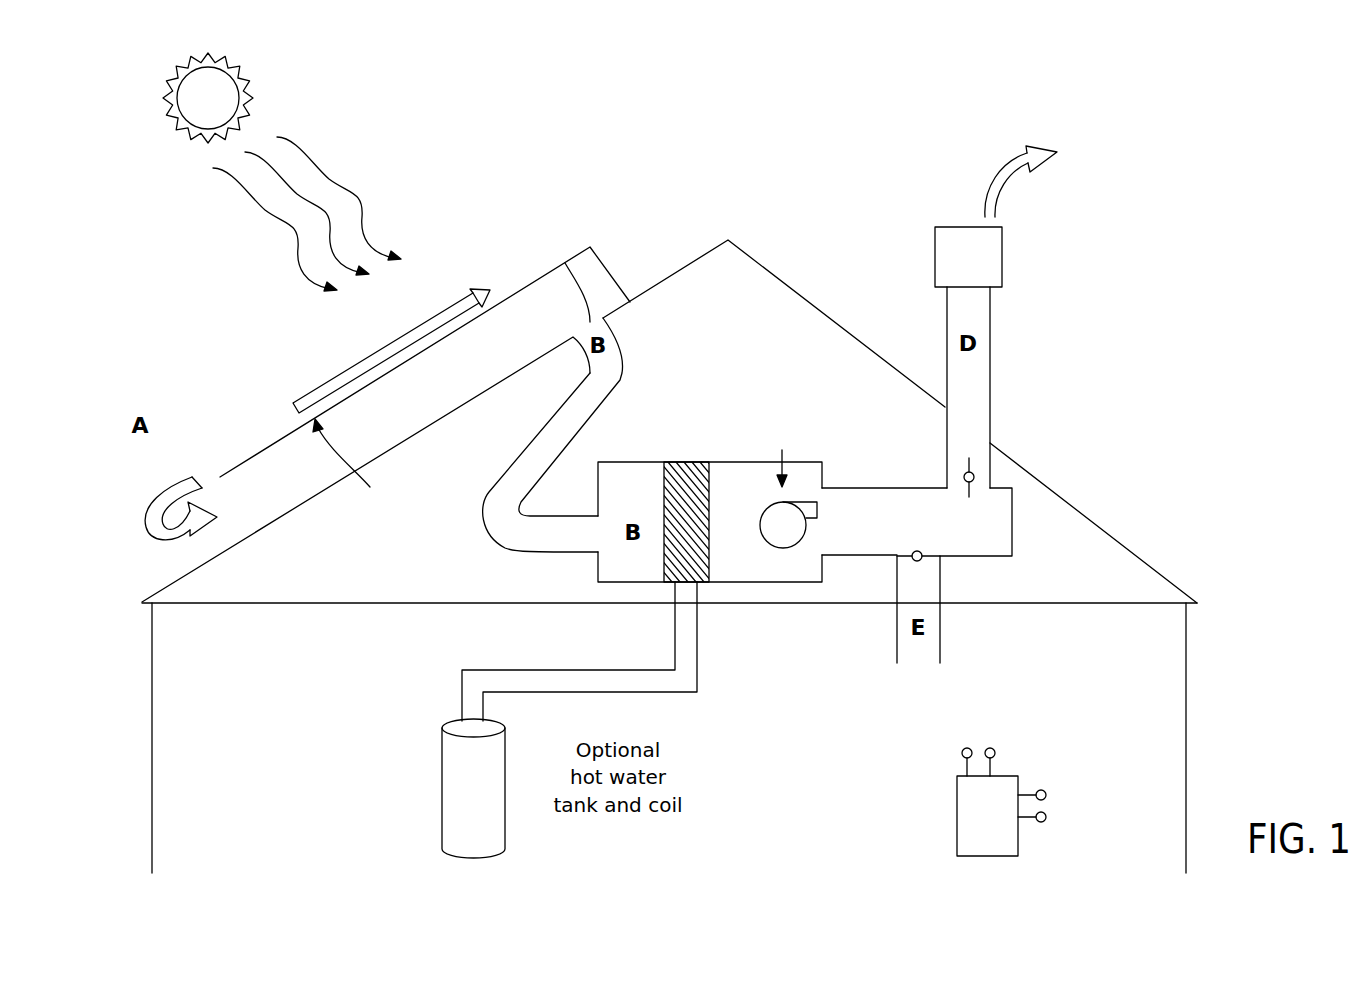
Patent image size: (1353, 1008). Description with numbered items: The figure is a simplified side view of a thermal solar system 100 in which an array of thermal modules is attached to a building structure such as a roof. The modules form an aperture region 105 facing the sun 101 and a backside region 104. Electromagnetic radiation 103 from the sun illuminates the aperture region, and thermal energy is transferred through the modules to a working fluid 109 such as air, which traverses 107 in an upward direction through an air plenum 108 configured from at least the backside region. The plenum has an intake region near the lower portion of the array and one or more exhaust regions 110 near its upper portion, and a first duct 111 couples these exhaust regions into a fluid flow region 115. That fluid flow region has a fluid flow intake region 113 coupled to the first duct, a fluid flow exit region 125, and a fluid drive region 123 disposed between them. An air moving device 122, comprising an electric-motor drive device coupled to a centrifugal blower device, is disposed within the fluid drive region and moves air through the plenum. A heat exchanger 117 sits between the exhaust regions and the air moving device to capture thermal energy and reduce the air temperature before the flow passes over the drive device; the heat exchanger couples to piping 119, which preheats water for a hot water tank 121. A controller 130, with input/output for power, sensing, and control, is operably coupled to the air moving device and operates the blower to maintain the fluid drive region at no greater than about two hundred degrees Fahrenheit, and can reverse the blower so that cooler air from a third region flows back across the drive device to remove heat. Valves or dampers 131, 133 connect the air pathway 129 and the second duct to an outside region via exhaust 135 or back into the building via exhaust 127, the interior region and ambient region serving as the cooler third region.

The thermal solar system 100 is at (812, 184).
The sun 101 is at (247, 90).
The electromagnetic radiation 103 is at (237, 187).
The backside region 104 is at (352, 468).
The aperture region 105 is at (517, 288).
The traversing of working fluid 107 is at (450, 307).
The air plenum 108 is at (408, 398).
The working fluid 109 is at (192, 523).
The exhaust region 110 is at (565, 263).
The duct 111 is at (620, 357).
The fluid flow intake region 113 is at (578, 537).
The fluid flow region 115 is at (735, 407).
The heat exchanger 117 is at (700, 583).
The piping 119 is at (670, 697).
The hot water tank 121 is at (450, 777).
The air moving device 122 is at (783, 548).
The fluid drive region 123 is at (826, 415).
The fluid flow exit region 125 is at (863, 547).
The exhaust to interior region 127 is at (930, 643).
The air pathway 129 is at (977, 392).
The controller 130 is at (1020, 837).
The valve or damper 131 is at (977, 476).
The valve or damper 133 is at (917, 547).
The exhaust to ambient region 135 is at (950, 248).